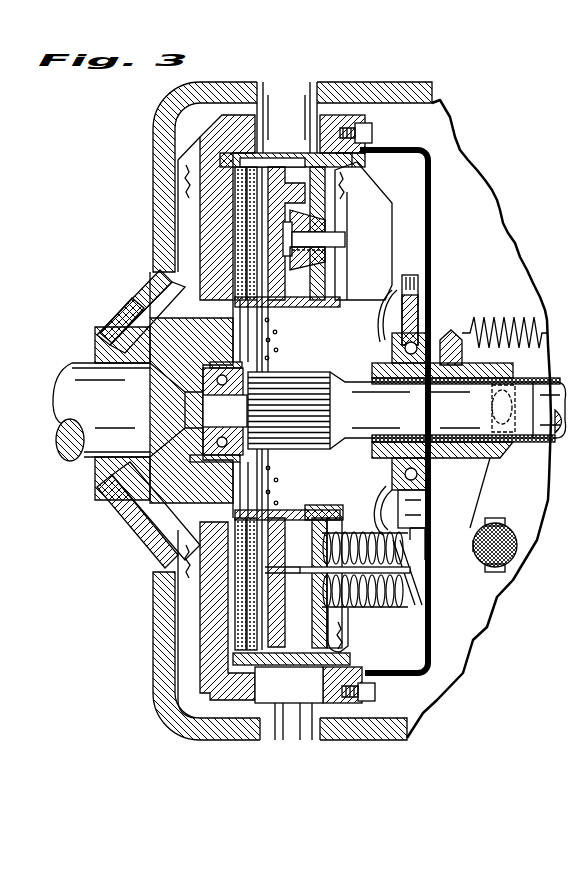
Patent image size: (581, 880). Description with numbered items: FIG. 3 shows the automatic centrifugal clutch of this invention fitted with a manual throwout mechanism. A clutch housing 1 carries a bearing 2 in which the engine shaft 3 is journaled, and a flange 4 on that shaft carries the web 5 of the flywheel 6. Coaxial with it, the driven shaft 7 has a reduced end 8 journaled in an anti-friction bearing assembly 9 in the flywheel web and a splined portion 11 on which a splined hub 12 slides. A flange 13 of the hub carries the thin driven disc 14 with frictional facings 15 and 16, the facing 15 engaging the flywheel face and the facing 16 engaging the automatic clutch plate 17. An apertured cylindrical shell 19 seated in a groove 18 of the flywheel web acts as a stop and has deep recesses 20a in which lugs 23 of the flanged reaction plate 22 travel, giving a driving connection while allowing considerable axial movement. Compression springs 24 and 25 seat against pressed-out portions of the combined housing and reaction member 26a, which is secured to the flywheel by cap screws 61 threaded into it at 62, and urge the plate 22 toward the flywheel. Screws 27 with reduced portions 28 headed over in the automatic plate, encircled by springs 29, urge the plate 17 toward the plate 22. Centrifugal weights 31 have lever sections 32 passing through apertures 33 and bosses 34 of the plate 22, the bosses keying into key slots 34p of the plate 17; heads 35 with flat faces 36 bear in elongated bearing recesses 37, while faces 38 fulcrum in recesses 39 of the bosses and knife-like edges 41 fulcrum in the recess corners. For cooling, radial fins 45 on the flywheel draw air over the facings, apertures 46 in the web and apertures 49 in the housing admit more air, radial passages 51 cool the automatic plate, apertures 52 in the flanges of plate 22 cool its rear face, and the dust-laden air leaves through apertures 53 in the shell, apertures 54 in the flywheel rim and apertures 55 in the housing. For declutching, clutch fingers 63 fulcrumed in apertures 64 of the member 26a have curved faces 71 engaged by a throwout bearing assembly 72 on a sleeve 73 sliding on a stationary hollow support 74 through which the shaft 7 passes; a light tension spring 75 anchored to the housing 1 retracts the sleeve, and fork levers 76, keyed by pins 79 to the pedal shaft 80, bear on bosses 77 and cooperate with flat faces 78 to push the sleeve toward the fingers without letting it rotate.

The clutch housing 1 is at (175, 620).
The bearing 2 is at (96, 357).
The engine shaft 3 is at (108, 408).
The flange 4 is at (190, 498).
The web 5 is at (197, 277).
The flywheel 6 is at (237, 697).
The driven shaft 7 is at (430, 415).
The reduced portion 8 is at (226, 420).
The anti-friction bearing assembly 9 is at (272, 470).
The splined portion 11 is at (300, 442).
The splined hub 12 is at (280, 355).
The flange 13 is at (279, 340).
The metal disc 14 is at (278, 500).
The frictional facing 15 is at (235, 627).
The frictional facing 16 is at (237, 647).
The automatic plate 17 is at (285, 685).
The groove 18 is at (242, 660).
The cylindrical shell 19 is at (240, 670).
The recesses 20a is at (313, 667).
The reaction plate 22 is at (370, 652).
The lugs 23 is at (352, 159).
The compression spring 24 is at (392, 600).
The compression spring 25 is at (400, 618).
The combined housing and reaction member 26a is at (431, 647).
The screws 27 is at (412, 570).
The reduced portions 28 is at (212, 577).
The compression springs 29 is at (405, 585).
The centrifugal weights 31 is at (394, 230).
The lever sections 32 is at (340, 240).
The apertures 33 is at (318, 228).
The bosses 34 is at (330, 262).
The key slots 34p is at (358, 197).
The heads 35 is at (300, 266).
The flat face 36 is at (275, 236).
The bearing recess 37 is at (240, 195).
The faces 38 is at (312, 250).
The recesses 39 is at (278, 322).
The knife-like edges 41 is at (266, 216).
The radial fins 45 is at (192, 167).
The apertures 46 is at (203, 533).
The apertures 49 is at (128, 303).
The radially extending passages 51 is at (286, 590).
The apertures 52 is at (346, 167).
The apertures 53 is at (267, 685).
The apertures 54 is at (263, 150).
The apertures 55 is at (300, 100).
The cap screws 61 is at (372, 135).
The threaded portion 62 is at (362, 135).
The clutch fingers 63 is at (381, 412).
The apertures 64 is at (410, 274).
The curved faces 71 is at (392, 347).
The clutch throwout bearing assembly 72 is at (424, 480).
The sleeve member 73 is at (483, 458).
The stationary hollow supporting member 74 is at (522, 345).
The tension spring 75 is at (470, 328).
The lever or fork members 76 is at (500, 480).
The bosses 77 is at (495, 402).
The flat faces 78 is at (490, 397).
The pins 79 is at (510, 560).
The shaft 80 is at (472, 546).